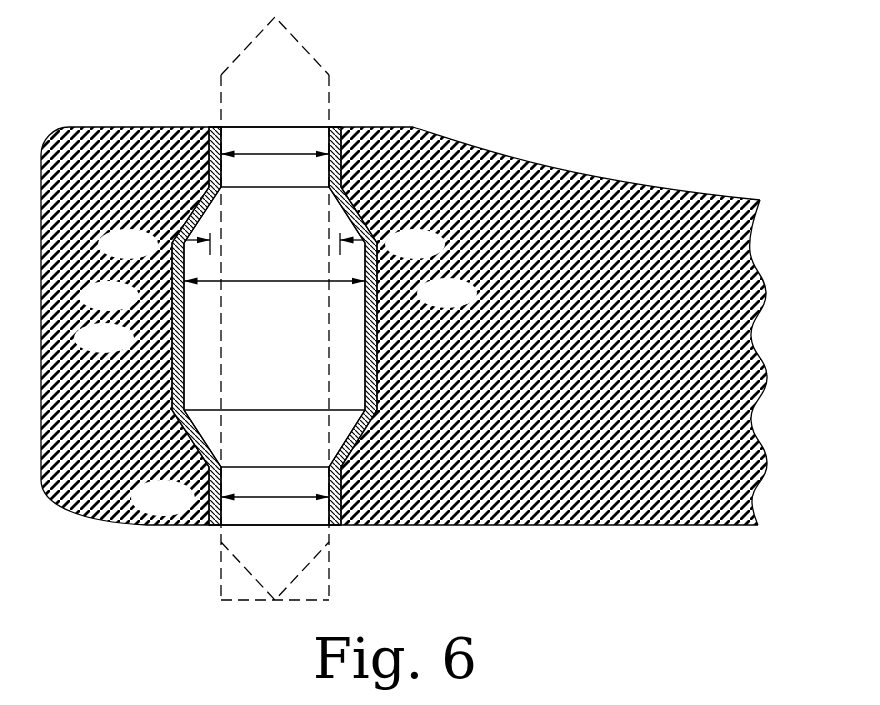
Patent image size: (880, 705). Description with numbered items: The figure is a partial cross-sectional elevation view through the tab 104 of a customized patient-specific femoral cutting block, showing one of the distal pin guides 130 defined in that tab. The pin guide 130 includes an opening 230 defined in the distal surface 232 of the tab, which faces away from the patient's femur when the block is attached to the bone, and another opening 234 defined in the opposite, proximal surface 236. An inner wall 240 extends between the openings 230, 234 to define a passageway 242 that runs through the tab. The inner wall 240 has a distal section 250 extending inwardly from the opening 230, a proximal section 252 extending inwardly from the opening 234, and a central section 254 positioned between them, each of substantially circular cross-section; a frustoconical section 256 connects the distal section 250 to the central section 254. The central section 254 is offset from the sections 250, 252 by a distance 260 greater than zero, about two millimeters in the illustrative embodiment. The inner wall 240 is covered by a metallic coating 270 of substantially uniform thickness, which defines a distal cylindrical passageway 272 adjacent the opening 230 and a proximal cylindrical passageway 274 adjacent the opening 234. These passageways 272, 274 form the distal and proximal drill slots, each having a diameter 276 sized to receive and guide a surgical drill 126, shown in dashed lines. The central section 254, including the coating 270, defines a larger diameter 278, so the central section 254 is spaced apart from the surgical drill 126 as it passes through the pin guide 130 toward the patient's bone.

The tab 104 is at (404, 326).
The surgical drill 126 is at (330, 93).
The distal pin guide 130 is at (286, 300).
The opening 230 is at (339, 527).
The distal surface 232 is at (538, 528).
The opening 234 is at (341, 127).
The proximal surface 236 is at (127, 127).
The inner wall 240 is at (417, 293).
The passageway 242 is at (219, 325).
The distal section 250 is at (209, 525).
The proximal section 252 is at (208, 128).
The central section 254 is at (176, 348).
The frustoconical section 256 is at (230, 496).
The distance 260 is at (184, 258).
The metallic coating 270 is at (178, 312).
The distal cylindrical passageway 272 is at (257, 478).
The proximal cylindrical passageway 274 is at (290, 113).
The diameter 276 is at (273, 157).
The diameter 278 is at (277, 283).